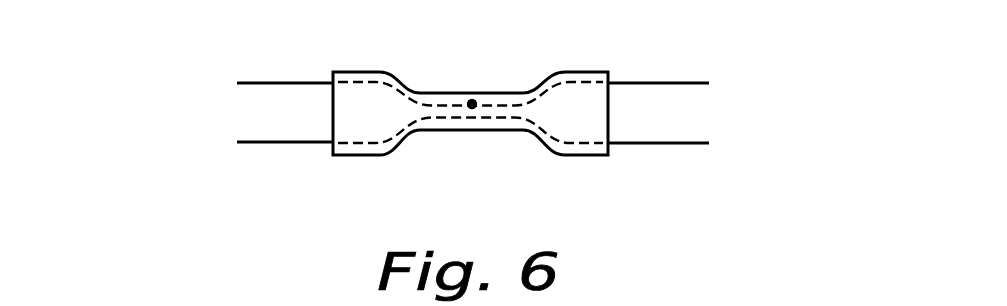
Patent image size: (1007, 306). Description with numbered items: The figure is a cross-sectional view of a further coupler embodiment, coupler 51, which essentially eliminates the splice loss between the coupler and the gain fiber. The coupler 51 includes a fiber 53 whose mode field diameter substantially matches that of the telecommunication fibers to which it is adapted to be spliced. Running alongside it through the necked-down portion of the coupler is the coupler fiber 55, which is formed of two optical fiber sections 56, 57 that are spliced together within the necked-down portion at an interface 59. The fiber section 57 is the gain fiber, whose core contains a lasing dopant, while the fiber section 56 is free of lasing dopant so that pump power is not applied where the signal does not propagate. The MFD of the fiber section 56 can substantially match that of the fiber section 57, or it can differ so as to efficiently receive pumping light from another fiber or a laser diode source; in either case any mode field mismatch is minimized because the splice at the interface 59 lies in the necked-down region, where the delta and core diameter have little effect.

The coupler 51 is at (469, 91).
The fiber 53 is at (647, 143).
The coupler fiber 55 is at (262, 86).
The fiber section 56 is at (310, 83).
The fiber section 57 is at (678, 83).
The interface 59 is at (473, 103).